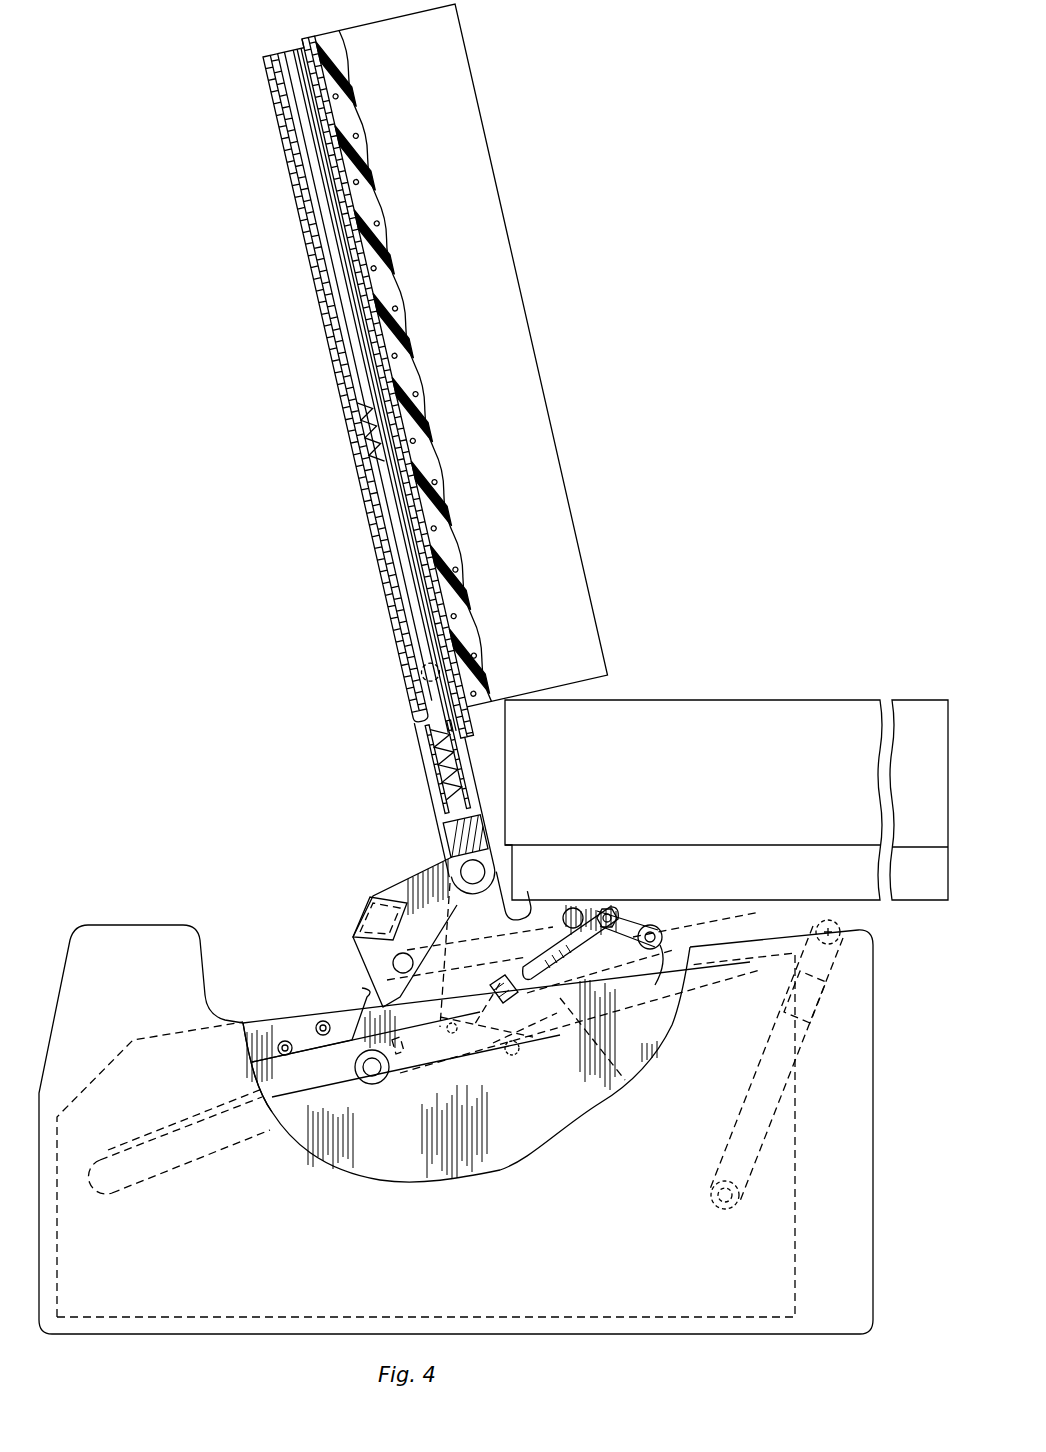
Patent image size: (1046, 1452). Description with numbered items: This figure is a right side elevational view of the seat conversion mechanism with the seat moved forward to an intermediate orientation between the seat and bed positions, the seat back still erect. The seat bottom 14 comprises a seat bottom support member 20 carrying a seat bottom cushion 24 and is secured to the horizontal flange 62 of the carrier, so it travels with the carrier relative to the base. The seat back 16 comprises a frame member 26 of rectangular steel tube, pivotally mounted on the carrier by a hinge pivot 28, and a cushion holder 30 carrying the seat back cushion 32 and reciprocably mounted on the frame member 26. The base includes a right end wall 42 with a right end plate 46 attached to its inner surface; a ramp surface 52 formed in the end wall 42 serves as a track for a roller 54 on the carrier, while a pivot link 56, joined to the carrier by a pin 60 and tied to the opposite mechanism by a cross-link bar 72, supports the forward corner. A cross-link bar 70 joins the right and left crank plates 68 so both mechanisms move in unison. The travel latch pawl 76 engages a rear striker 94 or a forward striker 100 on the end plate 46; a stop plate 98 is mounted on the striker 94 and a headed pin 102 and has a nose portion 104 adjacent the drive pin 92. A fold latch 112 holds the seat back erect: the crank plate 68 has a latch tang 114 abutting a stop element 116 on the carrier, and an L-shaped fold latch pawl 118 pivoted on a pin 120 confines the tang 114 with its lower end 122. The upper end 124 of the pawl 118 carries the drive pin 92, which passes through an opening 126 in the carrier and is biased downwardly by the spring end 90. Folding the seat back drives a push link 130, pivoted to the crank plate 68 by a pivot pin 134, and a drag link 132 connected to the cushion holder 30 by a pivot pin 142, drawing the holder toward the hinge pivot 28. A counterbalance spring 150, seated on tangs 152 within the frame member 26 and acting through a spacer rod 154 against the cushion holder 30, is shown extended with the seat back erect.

The seat bottom 14 is at (726, 788).
The seat back 16 is at (450, 477).
The seat bottom support member 20 is at (920, 885).
The seat bottom cushion 24 is at (723, 712).
The frame member 26 is at (497, 840).
The hinge pivot 28 is at (488, 872).
The cushion holder 30 is at (368, 545).
The seat back cushion 32 is at (585, 605).
The right end wall 42 is at (740, 940).
The right end plate 46 is at (175, 1042).
The ramp surface 52 is at (318, 1100).
The roller 54 is at (380, 1085).
The pivot link 56 is at (735, 1128).
The pin 60 is at (840, 935).
The horizontal flange 62 is at (410, 710).
The crank plate 68 is at (374, 928).
The cross-link bar 70 is at (360, 912).
The cross-link bar 72 is at (830, 1012).
The travel latch pawl 76 is at (585, 888).
The spring end 90 is at (612, 912).
The drive pin 92 is at (660, 950).
The rear striker 94 is at (262, 1063).
The stop plate 98 is at (285, 1040).
The forward striker 100 is at (525, 968).
The headed pin 102 is at (323, 1020).
The nose portion 104 is at (363, 990).
The fold latch 112 is at (453, 1030).
The latch tang 114 is at (390, 1067).
The stop element 116 is at (396, 1044).
The fold latch pawl 118 is at (580, 1055).
The pin 120 is at (512, 1056).
The lower end of pawl 122 is at (498, 986).
The upper end of pawl 124 is at (665, 932).
The opening 126 is at (640, 927).
The push link 130 is at (400, 888).
The drag link 132 is at (433, 812).
The pivot pin 134 is at (395, 958).
The pivot pin 142 is at (425, 670).
The counterbalance spring 150 is at (365, 445).
The tangs 152 is at (440, 790).
The spacer rod 154 is at (345, 325).